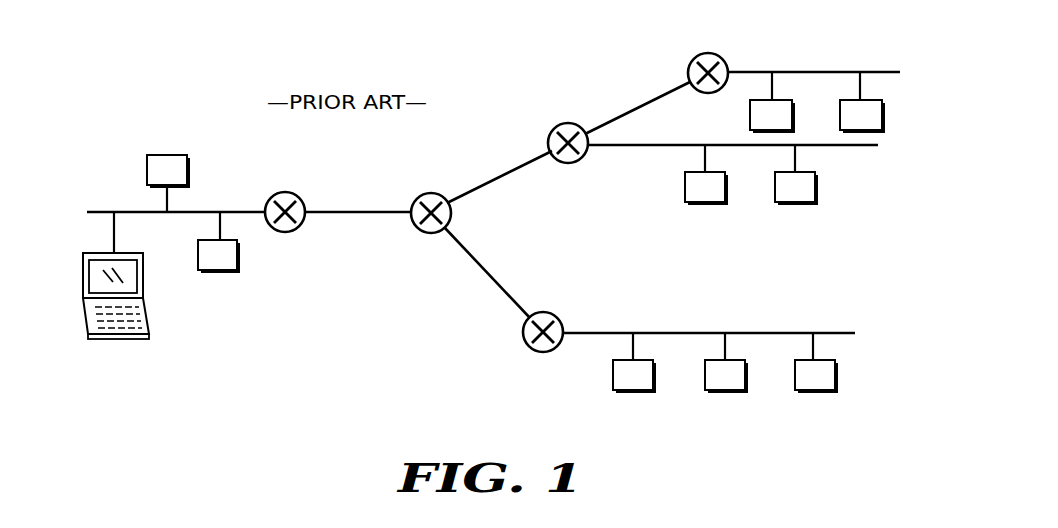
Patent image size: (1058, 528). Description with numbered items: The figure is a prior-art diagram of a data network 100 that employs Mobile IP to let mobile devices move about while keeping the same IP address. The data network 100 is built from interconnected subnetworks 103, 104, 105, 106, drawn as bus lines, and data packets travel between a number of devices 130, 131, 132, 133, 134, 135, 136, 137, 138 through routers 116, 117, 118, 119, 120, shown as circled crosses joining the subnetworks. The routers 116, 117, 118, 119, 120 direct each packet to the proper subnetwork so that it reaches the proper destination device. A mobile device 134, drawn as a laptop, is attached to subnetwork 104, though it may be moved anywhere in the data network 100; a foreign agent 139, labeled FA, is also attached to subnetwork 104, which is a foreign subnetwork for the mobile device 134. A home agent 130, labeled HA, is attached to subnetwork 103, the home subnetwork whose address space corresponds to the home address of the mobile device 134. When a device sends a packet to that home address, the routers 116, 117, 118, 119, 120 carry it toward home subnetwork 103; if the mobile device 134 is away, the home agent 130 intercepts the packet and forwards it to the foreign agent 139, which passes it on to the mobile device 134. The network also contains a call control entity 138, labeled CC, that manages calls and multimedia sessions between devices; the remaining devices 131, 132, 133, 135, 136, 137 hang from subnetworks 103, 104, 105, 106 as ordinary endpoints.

The data network 100 is at (372, 435).
The subnetwork 103 is at (845, 333).
The subnetwork 104 is at (93, 211).
The subnetwork 105 is at (868, 145).
The subnetwork 106 is at (887, 72).
The router 116 is at (527, 343).
The router 117 is at (417, 227).
The router 118 is at (290, 231).
The router 119 is at (549, 136).
The router 120 is at (689, 66).
The home agent 130 is at (820, 391).
The device 131 is at (730, 391).
The device 132 is at (637, 391).
The device 133 is at (222, 271).
The mobile device 134 is at (137, 339).
The device 135 is at (710, 203).
The device 136 is at (797, 203).
The device 137 is at (794, 108).
The call control entity 138 is at (885, 108).
The foreign agent 139 is at (173, 155).